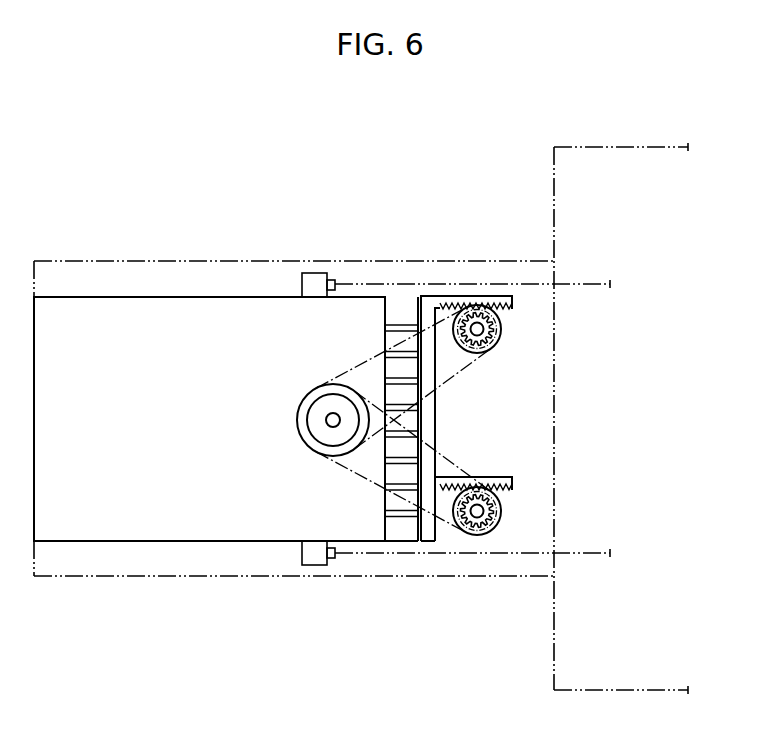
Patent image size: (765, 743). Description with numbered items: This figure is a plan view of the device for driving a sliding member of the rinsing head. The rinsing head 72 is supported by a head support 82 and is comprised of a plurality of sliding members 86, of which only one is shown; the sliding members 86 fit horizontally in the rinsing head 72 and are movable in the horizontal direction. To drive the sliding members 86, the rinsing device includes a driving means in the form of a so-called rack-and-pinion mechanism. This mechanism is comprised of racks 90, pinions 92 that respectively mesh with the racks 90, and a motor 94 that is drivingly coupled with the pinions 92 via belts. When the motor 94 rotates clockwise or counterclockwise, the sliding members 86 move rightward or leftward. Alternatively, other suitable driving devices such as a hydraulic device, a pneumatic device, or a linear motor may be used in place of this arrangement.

The rinsing head 72 is at (93, 336).
The head support 82 is at (262, 261).
The sliding members 86 is at (407, 353).
The racks 90 is at (513, 302).
The pinions 92 is at (487, 492).
The motor 94 is at (297, 425).